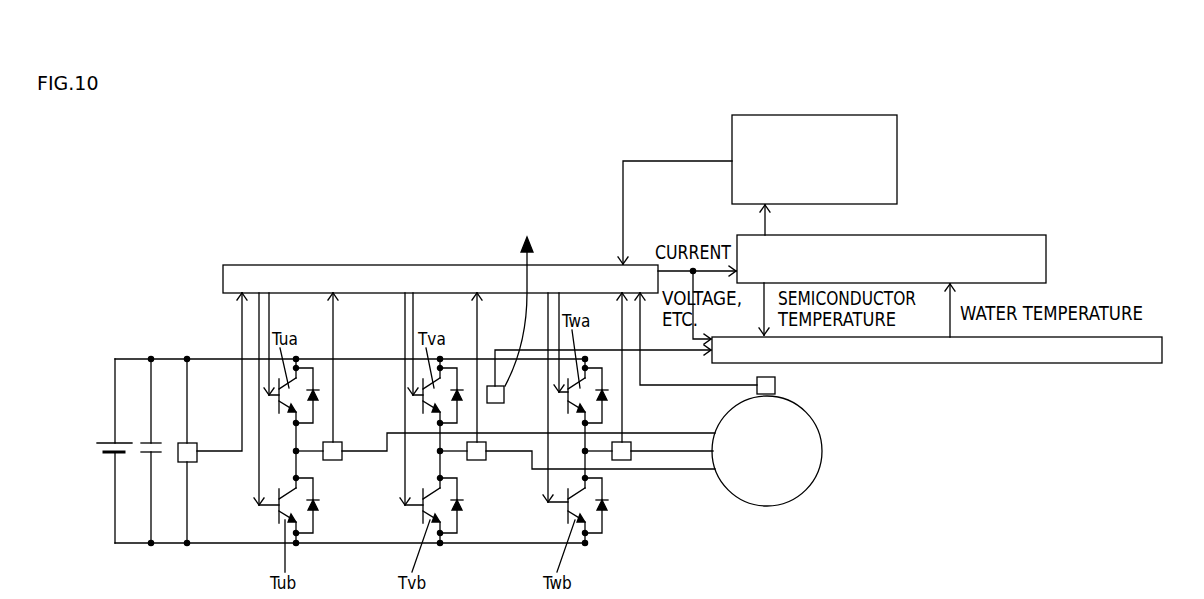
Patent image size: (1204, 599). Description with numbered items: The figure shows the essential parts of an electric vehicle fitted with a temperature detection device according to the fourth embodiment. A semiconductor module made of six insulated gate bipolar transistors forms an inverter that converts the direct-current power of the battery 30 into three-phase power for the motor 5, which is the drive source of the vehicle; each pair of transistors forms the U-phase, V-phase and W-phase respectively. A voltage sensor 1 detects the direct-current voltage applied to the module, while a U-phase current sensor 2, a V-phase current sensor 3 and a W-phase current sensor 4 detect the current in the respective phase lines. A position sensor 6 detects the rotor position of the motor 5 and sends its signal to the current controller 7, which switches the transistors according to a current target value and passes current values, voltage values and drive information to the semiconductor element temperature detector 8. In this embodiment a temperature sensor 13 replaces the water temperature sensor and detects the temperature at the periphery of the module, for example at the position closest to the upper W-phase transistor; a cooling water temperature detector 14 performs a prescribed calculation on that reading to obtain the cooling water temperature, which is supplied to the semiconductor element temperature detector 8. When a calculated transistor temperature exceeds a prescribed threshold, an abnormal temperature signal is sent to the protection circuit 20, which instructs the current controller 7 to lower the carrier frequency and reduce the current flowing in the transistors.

The voltage sensor 1 is at (207, 418).
The U-phase current sensor 2 is at (505, 415).
The V-phase current sensor 3 is at (577, 415).
The W-phase current sensor 4 is at (649, 417).
The motor 5 is at (767, 451).
The position sensor 6 is at (800, 345).
The current controller 7 is at (440, 279).
The semiconductor element temperature detector 8 is at (891, 270).
The temperature sensor 13 is at (570, 302).
The cooling water temperature detector 14 is at (937, 323).
The protection circuit 20 is at (757, 179).
The battery 30 is at (101, 451).